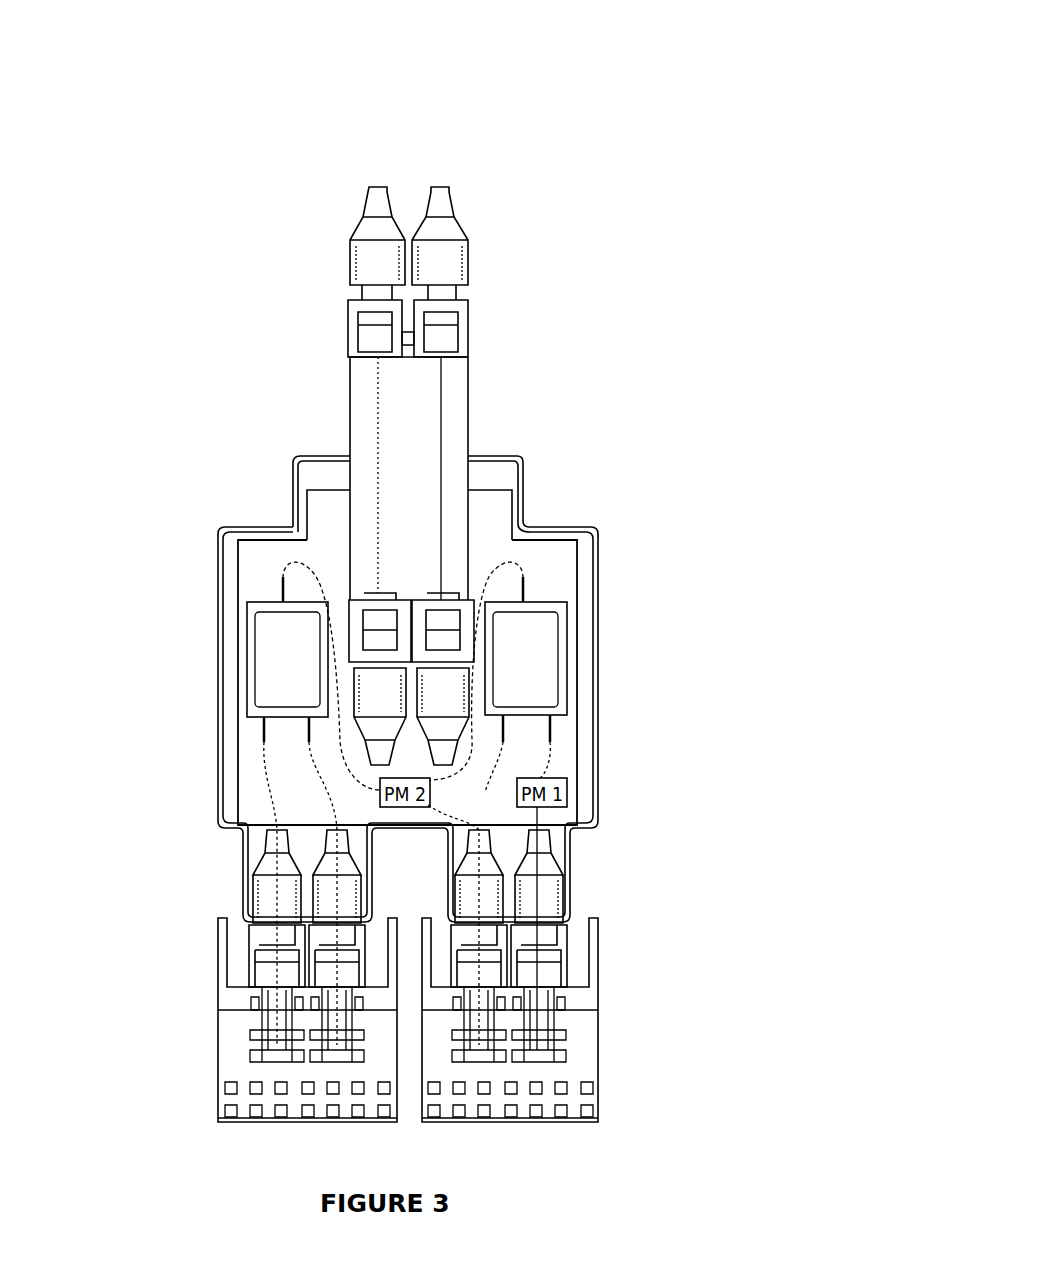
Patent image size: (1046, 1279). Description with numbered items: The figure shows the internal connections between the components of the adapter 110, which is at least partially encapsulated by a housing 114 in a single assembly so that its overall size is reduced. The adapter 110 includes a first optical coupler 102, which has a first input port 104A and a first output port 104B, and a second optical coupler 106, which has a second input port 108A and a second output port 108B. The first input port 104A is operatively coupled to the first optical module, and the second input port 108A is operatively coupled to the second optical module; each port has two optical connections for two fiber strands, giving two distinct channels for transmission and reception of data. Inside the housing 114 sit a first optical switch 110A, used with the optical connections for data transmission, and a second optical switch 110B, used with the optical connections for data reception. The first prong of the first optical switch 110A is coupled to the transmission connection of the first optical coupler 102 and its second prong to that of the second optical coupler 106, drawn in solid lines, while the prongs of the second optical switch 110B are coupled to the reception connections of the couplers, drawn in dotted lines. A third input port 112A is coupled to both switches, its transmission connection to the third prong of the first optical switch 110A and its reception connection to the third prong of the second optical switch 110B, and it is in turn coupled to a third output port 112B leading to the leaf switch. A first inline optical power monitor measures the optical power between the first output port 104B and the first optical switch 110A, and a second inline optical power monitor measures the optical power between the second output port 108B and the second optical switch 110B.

The adapter 110 is at (648, 56).
The third output port 112B is at (402, 192).
The third input port 112A is at (410, 742).
The housing 114 is at (530, 521).
The second optical switch 110B is at (287, 659).
The first optical switch 110A is at (526, 659).
The second output port 108B is at (298, 834).
The first output port 104B is at (510, 830).
The second optical coupler 106 is at (276, 931).
The first optical coupler 102 is at (522, 928).
The second input port 108A is at (281, 1050).
The first input port 104A is at (494, 1064).